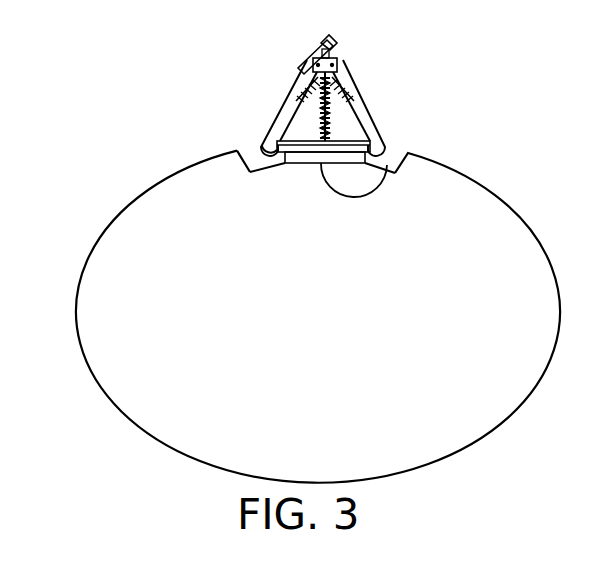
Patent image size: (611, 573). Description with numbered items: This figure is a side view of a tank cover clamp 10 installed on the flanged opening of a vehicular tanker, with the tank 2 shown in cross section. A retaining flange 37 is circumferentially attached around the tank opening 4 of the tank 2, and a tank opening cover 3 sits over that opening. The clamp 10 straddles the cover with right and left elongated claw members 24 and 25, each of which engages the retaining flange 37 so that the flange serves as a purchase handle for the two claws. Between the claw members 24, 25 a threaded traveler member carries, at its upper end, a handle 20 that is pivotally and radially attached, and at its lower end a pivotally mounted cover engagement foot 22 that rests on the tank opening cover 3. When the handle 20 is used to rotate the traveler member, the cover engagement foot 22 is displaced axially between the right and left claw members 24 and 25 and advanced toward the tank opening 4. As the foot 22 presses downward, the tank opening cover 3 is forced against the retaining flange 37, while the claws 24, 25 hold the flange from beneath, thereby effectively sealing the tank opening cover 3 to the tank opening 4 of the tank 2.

The tank cover clamp 10 is at (426, 38).
The tank 2 is at (559, 302).
The tank opening cover 3 is at (371, 145).
The tank opening 4 is at (388, 167).
The handle 20 is at (314, 62).
The cover engagement foot 22 is at (328, 137).
The right elongated claw member 24 is at (368, 121).
The left elongated claw member 25 is at (285, 120).
The retaining flange 37 is at (273, 148).